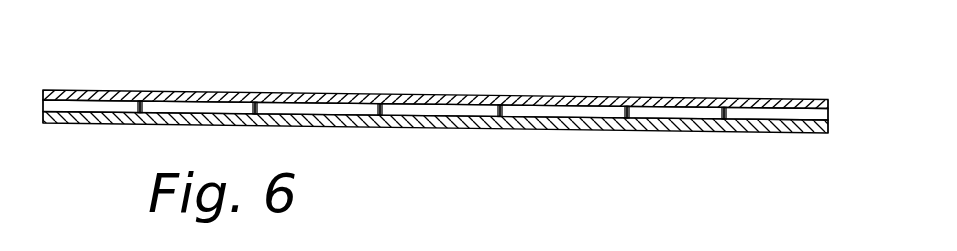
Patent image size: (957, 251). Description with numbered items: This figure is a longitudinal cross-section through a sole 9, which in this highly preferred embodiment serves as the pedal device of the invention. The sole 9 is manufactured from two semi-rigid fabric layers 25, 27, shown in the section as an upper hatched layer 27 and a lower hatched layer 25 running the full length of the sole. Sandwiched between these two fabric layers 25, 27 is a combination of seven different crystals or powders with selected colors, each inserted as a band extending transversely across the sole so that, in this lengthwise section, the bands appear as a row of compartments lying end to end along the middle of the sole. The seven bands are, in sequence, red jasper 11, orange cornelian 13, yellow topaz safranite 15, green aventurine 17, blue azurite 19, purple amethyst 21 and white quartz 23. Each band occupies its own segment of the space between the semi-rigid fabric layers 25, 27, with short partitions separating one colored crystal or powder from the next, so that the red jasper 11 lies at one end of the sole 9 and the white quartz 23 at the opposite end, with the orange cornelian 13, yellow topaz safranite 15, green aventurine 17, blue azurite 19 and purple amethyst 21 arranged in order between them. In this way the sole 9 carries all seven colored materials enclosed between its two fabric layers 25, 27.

The sole 9 is at (490, 161).
The red jasper 11 is at (752, 117).
The orange cornelian 13 is at (640, 110).
The yellow topaz safranite 15 is at (525, 110).
The green aventurine 17 is at (403, 110).
The blue azurite 19 is at (290, 110).
The purple amethyst 21 is at (167, 108).
The white quartz 23 is at (72, 108).
The semi-rigid fabric layer 25 is at (760, 132).
The semi-rigid fabric layer 27 is at (770, 100).